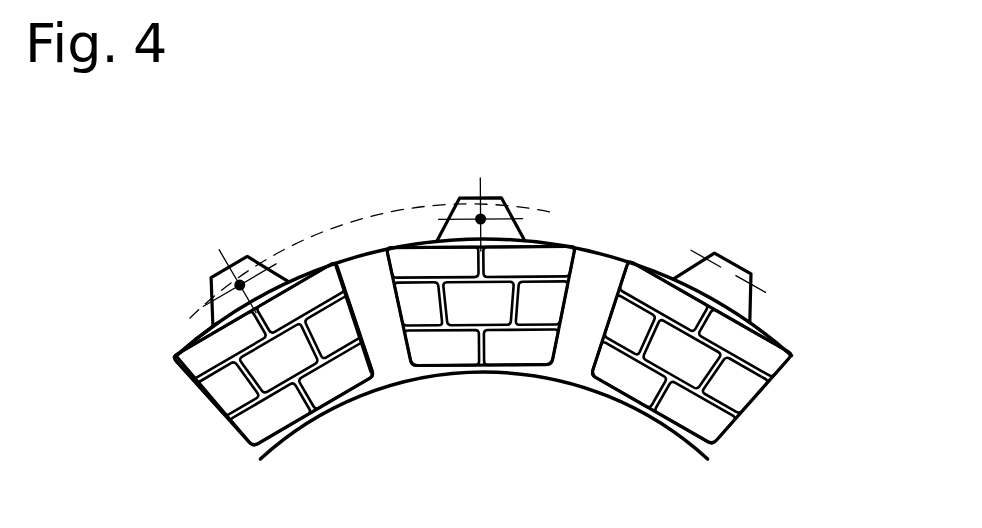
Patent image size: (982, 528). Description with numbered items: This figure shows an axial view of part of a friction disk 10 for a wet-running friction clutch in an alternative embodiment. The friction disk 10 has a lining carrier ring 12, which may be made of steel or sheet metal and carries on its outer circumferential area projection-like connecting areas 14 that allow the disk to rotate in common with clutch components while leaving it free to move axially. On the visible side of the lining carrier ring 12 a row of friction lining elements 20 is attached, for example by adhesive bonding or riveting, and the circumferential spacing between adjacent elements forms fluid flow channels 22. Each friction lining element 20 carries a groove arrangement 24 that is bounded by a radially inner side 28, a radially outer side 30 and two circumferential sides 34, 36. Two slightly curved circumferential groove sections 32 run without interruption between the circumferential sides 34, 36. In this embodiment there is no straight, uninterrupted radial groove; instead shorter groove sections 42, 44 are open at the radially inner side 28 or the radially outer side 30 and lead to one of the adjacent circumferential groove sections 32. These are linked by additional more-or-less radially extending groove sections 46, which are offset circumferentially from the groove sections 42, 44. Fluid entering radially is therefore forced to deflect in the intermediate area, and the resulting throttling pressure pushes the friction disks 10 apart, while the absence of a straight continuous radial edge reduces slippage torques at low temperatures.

The friction disk 10 is at (772, 176).
The lining carrier ring 12 is at (636, 265).
The connecting area 14 is at (738, 262).
The friction lining element 20 is at (308, 268).
The fluid flow channel 22 is at (375, 320).
The groove arrangement 24 is at (325, 250).
The radially inner side 28 is at (310, 390).
The radially outer side 30 is at (203, 328).
The circumferential groove section 32 is at (212, 382).
The circumferential side 34 is at (250, 447).
The circumferential side 36 is at (357, 328).
The groove section 42 is at (325, 388).
The groove section 44 is at (295, 305).
The radially extending groove section 46 is at (190, 342).